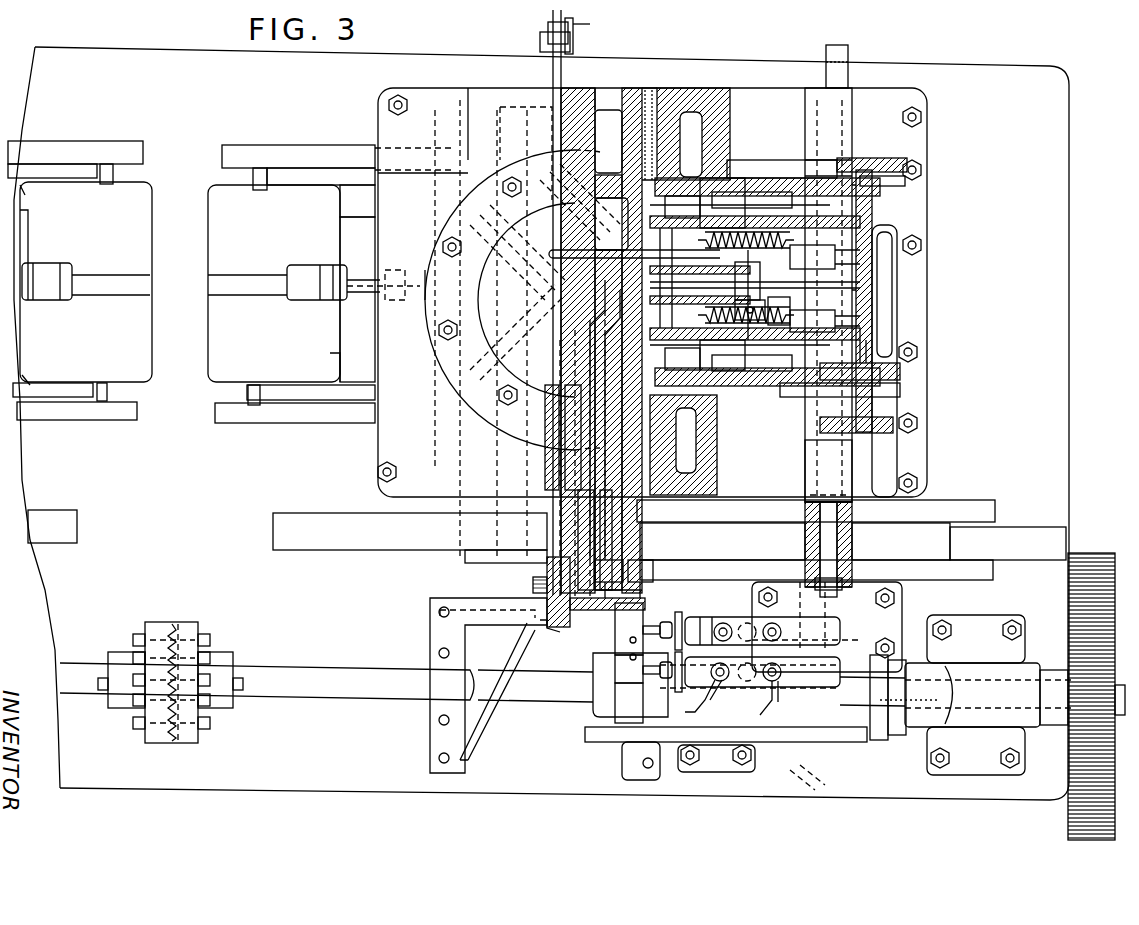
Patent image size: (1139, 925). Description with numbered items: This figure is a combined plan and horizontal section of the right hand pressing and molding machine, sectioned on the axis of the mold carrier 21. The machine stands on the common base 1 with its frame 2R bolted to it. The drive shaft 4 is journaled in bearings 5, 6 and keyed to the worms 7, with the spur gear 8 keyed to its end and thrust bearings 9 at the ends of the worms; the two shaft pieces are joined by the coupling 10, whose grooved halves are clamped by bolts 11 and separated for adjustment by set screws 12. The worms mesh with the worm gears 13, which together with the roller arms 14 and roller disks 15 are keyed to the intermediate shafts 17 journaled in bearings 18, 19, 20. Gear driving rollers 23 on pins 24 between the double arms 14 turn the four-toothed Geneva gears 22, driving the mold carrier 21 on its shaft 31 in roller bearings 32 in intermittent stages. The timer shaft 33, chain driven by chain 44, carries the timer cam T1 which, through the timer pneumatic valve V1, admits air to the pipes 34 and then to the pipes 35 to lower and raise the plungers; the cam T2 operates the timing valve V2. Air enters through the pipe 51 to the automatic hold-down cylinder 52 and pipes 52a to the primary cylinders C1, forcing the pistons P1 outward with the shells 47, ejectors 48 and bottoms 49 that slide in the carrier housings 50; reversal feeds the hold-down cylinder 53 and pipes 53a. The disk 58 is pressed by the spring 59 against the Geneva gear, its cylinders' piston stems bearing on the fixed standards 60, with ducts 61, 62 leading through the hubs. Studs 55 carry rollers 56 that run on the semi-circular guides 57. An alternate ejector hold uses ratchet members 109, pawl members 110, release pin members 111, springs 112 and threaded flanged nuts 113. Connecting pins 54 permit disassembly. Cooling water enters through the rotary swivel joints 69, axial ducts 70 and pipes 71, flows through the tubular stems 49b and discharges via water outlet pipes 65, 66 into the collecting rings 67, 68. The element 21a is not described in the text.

The common base 1 is at (1000, 80).
The frame 2R is at (460, 432).
The drive shaft 4 is at (345, 668).
The bearing 5 is at (1005, 720).
The bearing 6 is at (740, 718).
The worm 7 is at (880, 735).
The spur gear 8 is at (1068, 815).
The thrust bearing 9 is at (893, 710).
The coupling 10 is at (190, 690).
The bolt 11 is at (205, 700).
The set screw 12 is at (125, 700).
The worm gear 13 is at (925, 715).
The roller arm 14 is at (920, 512).
The roller disk 15 is at (1000, 528).
The intermediate shaft 17 is at (840, 72).
The bearing 18 is at (845, 602).
The bearing 19 is at (845, 484).
The bearing 20 is at (855, 112).
The mold carrier 21 is at (360, 232).
The spindle end 21a is at (50, 265).
The Geneva gear 22 is at (80, 535).
The gear driving roller 23 is at (852, 543).
The pin 24 is at (820, 540).
The mold carrier shaft 31 is at (563, 90).
The roller bearing 32 is at (660, 95).
The timer shaft 33 is at (595, 684).
The pipe 34 is at (703, 696).
The pipe 35 is at (776, 703).
The chain 44 is at (795, 735).
The shell 47 is at (905, 370).
The ejector 48 is at (895, 222).
The bottom 49 is at (900, 278).
The tubular stem 49b is at (825, 256).
The carrier housing 50 is at (205, 332).
The pipe 51 is at (720, 618).
The automatic hold-down cylinder 52 is at (585, 612).
The pipe 52a is at (592, 375).
The automatic hold-down cylinder 53 is at (628, 585).
The pipe 53a is at (595, 352).
The connecting pin 54 is at (749, 295).
The stud 55 is at (770, 205).
The roller 56 is at (790, 170).
The semi-circular guide 57 is at (60, 178).
The disk 58 is at (480, 560).
The spring 59 is at (533, 588).
The fixed standard 60 is at (478, 698).
The duct 61 is at (600, 492).
The duct 62 is at (620, 522).
The water outlet pipe 65 is at (250, 178).
The water outlet pipe 66 is at (255, 390).
The overflow collecting ring 67 is at (95, 152).
The overflow collecting ring 68 is at (85, 420).
The rotary swivel joint 69 is at (580, 44).
The axial duct 70 is at (608, 141).
The pipe 71 is at (615, 248).
The ratchet member 109 is at (688, 294).
The pawl member 110 is at (767, 292).
The release pin member 111 is at (748, 180).
The spring 112 is at (825, 320).
The threaded flanged nut 113 is at (765, 314).
The primary cylinder C1 is at (738, 317).
The piston P1 is at (690, 296).
The timer cam T1 is at (615, 670).
The timer cam T2 is at (634, 629).
The timer pneumatic valve V1 is at (825, 680).
The timing valve V2 is at (830, 632).